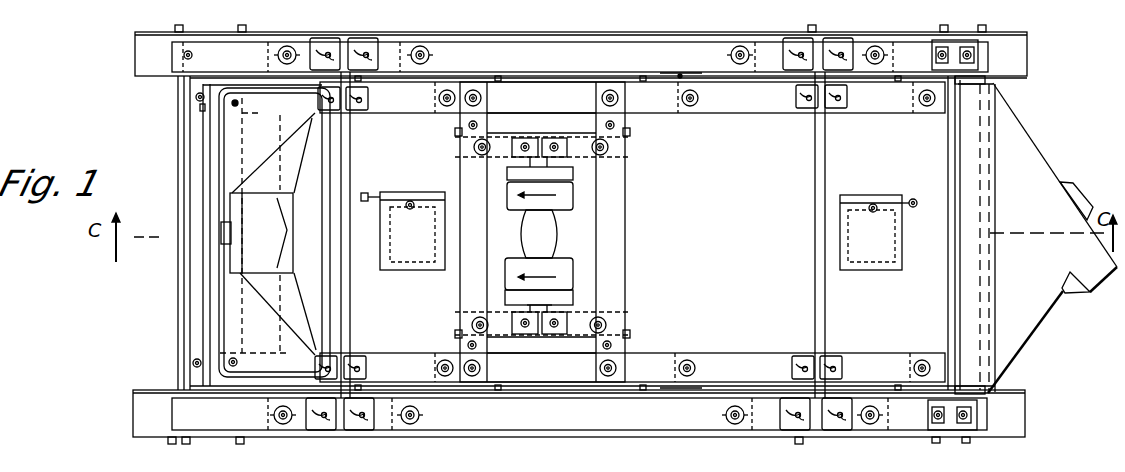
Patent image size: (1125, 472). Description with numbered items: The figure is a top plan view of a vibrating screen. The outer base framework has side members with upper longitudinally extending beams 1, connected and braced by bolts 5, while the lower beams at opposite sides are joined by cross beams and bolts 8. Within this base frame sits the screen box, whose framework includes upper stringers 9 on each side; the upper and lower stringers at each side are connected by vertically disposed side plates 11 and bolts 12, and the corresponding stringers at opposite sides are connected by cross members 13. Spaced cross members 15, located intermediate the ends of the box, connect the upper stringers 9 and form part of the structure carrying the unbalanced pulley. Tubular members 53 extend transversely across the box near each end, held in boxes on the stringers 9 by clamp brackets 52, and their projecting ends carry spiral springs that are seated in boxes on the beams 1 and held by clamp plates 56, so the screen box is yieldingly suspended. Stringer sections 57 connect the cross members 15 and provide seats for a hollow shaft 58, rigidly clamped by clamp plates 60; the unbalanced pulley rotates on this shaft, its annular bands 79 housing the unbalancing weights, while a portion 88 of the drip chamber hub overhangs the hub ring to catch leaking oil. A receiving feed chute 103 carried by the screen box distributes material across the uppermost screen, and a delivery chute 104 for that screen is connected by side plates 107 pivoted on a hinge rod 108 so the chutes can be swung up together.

The upper longitudinally extending beam 1 is at (655, 432).
The bolts 5 is at (262, 52).
The bolts 8 is at (968, 443).
The upper stringer 9 is at (745, 118).
The side plates 11 is at (671, 72).
The bolts 12 is at (452, 92).
The cross members 13 is at (326, 232).
The cross members 15 is at (622, 240).
The clamp brackets 52 is at (360, 112).
The members 53 is at (352, 292).
The clamp plates 56 is at (358, 46).
The stringer sections 57 is at (573, 358).
The hollow shaft 58 is at (556, 308).
The clamp plates 60 is at (545, 137).
The annular band 79 is at (570, 200).
The portion 88 is at (570, 176).
The receiving feed chute 103 is at (243, 192).
The chute member 104 is at (1045, 180).
The side plates or members 107 is at (963, 86).
The hinge rod 108 is at (947, 296).